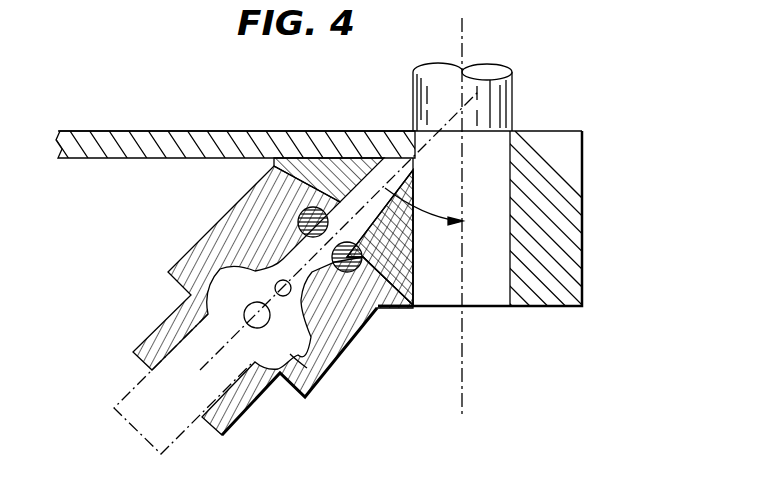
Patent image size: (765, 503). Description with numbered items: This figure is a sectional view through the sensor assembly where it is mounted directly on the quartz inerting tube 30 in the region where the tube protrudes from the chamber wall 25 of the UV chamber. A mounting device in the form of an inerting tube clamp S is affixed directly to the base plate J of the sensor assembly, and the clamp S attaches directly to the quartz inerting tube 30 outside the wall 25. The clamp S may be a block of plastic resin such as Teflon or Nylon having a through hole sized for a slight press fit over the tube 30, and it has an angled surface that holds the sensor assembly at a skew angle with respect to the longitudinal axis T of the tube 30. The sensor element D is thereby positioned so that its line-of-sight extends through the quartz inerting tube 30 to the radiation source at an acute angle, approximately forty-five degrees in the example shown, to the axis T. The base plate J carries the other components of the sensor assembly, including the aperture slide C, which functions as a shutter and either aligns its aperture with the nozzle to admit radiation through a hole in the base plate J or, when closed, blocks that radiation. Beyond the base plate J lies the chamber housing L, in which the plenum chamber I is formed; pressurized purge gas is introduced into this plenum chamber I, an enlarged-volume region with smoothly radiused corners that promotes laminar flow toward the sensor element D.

The chamber wall 25 is at (223, 143).
The base plate J is at (295, 166).
The chamber housing L is at (197, 247).
The sensor element D is at (185, 403).
The plenum chamber I is at (307, 392).
The aperture slide C is at (395, 307).
The quartz inerting tube 30 is at (487, 298).
The longitudinal axis T is at (463, 398).
The inerting tube clamp S is at (583, 274).